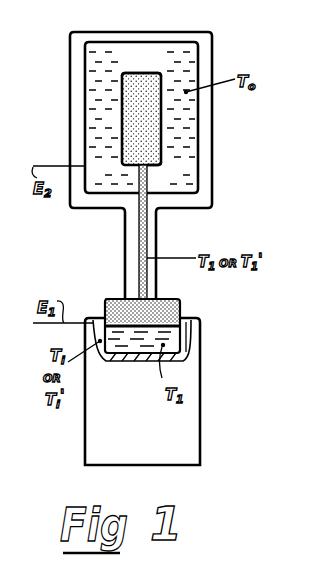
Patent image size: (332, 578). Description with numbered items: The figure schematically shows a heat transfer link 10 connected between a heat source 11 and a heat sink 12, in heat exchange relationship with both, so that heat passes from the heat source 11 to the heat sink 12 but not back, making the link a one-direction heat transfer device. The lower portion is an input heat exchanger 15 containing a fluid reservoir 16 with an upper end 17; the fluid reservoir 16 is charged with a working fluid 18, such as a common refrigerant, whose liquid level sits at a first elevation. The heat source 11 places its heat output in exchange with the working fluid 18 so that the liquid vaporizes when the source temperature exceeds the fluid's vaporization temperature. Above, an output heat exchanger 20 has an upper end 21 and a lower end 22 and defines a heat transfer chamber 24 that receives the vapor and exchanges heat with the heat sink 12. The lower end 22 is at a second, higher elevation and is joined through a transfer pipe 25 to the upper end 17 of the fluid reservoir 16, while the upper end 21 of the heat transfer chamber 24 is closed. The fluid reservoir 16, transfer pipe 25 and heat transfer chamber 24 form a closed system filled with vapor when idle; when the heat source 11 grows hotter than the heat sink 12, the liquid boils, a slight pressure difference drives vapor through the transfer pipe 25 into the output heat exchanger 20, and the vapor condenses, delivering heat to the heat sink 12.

The heat transfer link 10 is at (84, 258).
The heat source 11 is at (84, 443).
The heat sink 12 is at (210, 134).
The input heat exchanger 15 is at (183, 309).
The fluid reservoir 16 is at (118, 298).
The upper end 17 is at (148, 300).
The working fluid 18 is at (173, 344).
The output heat exchanger 20 is at (162, 89).
The upper end 21 is at (148, 73).
The lower end 22 is at (152, 167).
The heat transfer chamber 24 is at (133, 117).
The transfer pipe 25 is at (144, 243).